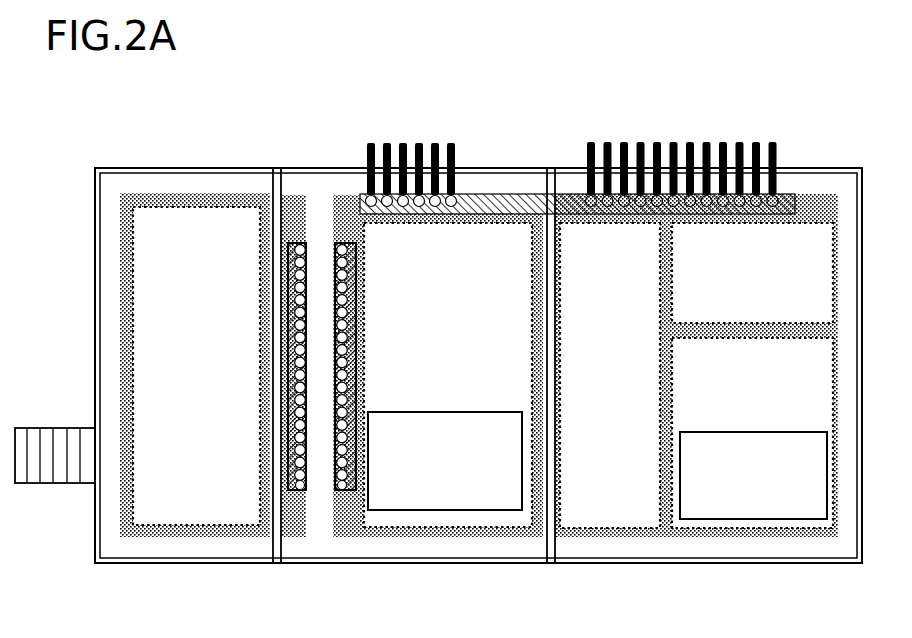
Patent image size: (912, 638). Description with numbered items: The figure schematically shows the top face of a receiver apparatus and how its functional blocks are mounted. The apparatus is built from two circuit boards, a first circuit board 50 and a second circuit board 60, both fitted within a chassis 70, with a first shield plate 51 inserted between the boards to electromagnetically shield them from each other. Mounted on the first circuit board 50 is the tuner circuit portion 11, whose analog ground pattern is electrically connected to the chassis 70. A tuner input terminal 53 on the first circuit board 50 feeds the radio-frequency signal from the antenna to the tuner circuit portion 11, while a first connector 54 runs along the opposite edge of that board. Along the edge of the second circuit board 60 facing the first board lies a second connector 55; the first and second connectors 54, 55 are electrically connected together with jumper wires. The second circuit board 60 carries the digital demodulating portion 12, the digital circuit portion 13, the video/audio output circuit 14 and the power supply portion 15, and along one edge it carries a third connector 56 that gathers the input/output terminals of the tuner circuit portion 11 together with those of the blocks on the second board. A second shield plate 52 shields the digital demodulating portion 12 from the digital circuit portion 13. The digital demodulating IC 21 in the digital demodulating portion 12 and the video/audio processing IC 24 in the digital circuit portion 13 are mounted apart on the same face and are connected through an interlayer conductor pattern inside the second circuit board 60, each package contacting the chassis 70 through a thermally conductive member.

The chassis 70 is at (95, 183).
The first circuit board 50 is at (195, 323).
The tuner circuit portion 11 is at (196, 366).
The first shield plate 51 is at (283, 184).
The second shield plate 52 is at (559, 178).
The tuner input terminal 53 is at (55, 484).
The first connector 54 is at (298, 493).
The second connector 55 is at (348, 493).
The second circuit board 60 is at (347, 193).
The third connector 56 is at (417, 143).
The digital demodulating portion 12 is at (448, 424).
The digital demodulating IC 21 is at (443, 513).
The power supply portion 15 is at (610, 375).
The video/audio output circuit 14 is at (812, 222).
The digital circuit portion 13 is at (752, 482).
The video/audio processing IC 24 is at (775, 520).